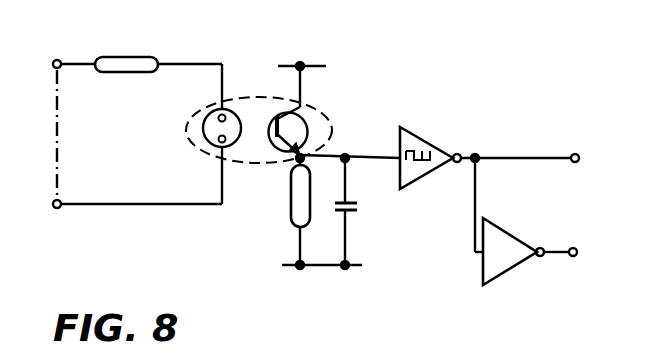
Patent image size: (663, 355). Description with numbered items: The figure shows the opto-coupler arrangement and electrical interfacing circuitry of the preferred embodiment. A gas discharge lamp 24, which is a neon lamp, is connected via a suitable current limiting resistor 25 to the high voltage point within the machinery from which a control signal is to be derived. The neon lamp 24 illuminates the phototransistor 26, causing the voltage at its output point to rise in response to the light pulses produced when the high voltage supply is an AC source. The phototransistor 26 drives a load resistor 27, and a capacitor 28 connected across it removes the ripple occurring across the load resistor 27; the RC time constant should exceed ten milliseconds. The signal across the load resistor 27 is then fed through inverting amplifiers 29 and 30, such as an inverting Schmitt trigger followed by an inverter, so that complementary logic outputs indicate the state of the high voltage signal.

The gas discharge lamp 24 is at (202, 127).
The current limiting resistor 25 is at (121, 56).
The phototransistor 26 is at (312, 126).
The load resistor 27 is at (291, 200).
The capacitor 28 is at (358, 210).
The inverting amplifier 29 is at (452, 125).
The inverting amplifier 30 is at (515, 236).